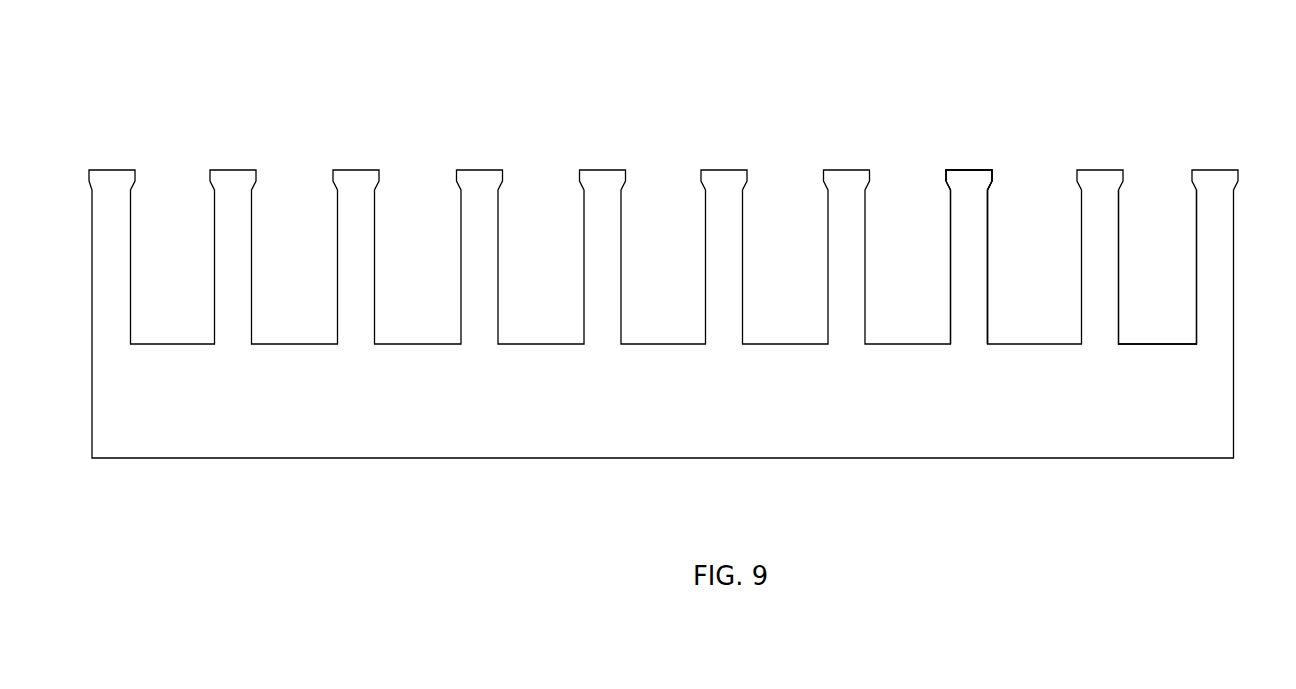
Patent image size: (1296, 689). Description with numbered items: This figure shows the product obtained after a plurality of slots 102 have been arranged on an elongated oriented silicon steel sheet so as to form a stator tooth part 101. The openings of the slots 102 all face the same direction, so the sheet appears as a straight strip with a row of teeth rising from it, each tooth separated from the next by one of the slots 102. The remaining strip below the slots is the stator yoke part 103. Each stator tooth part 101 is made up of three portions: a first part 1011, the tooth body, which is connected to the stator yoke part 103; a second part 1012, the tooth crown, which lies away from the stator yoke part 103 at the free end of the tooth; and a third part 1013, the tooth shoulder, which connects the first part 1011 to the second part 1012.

The stator tooth part 101 is at (1013, 235).
The first part (tooth body) 1011 is at (1013, 295).
The second part (tooth crown) 1012 is at (1023, 152).
The third part (tooth shoulder) 1013 is at (988, 230).
The slot 102 is at (1140, 227).
The stator yoke part 103 is at (1215, 420).